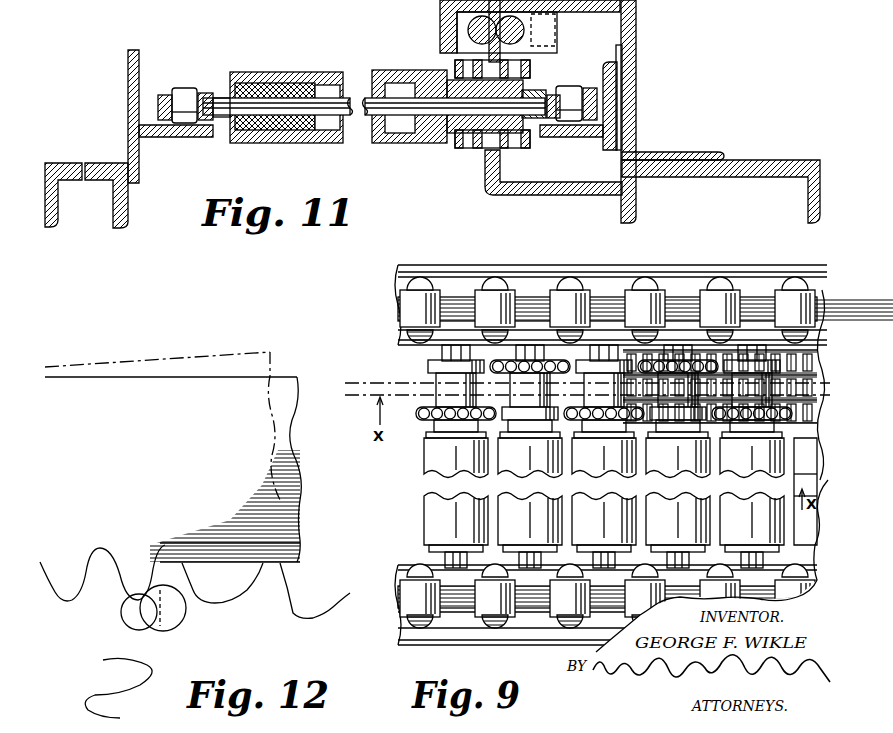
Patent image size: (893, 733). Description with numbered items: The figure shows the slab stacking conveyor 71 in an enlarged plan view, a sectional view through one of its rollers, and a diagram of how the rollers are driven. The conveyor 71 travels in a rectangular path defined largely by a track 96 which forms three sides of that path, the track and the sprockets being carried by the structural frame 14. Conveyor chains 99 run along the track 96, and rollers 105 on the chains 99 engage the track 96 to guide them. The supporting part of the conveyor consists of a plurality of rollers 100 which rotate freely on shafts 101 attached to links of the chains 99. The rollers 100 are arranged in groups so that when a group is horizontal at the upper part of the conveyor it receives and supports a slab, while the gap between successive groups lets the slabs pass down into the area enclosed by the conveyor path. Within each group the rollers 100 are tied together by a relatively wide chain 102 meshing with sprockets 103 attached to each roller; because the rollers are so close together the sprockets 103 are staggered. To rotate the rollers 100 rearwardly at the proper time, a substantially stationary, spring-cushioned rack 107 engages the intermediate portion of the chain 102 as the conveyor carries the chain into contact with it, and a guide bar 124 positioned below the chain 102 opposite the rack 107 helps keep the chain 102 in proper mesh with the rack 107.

In FIG. 11, the structural frame 14 is at (787, 166).
In FIG. 9, the conveyor 71 is at (717, 248).
In FIG. 11, the track 96 is at (612, 72).
In FIG. 9, the track 96 is at (648, 272).
In FIG. 11, the conveyor chains 99 is at (163, 95).
In FIG. 11, the rollers 100 is at (283, 73).
In FIG. 9, the rollers 100 is at (432, 516).
In FIG. 11, the shafts 101 is at (345, 104).
In FIG. 9, the shafts 101 is at (447, 566).
In FIG. 11, the chain 102 is at (457, 142).
In FIG. 12, the chain 102 is at (110, 606).
In FIG. 9, the chain 102 is at (745, 360).
In FIG. 12, the sprockets 103 is at (147, 665).
In FIG. 9, the sprockets 103 is at (420, 415).
In FIG. 11, the rollers 105 is at (183, 95).
In FIG. 9, the rollers 105 is at (478, 312).
In FIG. 12, the rack 107 is at (172, 402).
In FIG. 9, the rack 107 is at (395, 388).
In FIG. 11, the guide bar 124 is at (530, 196).